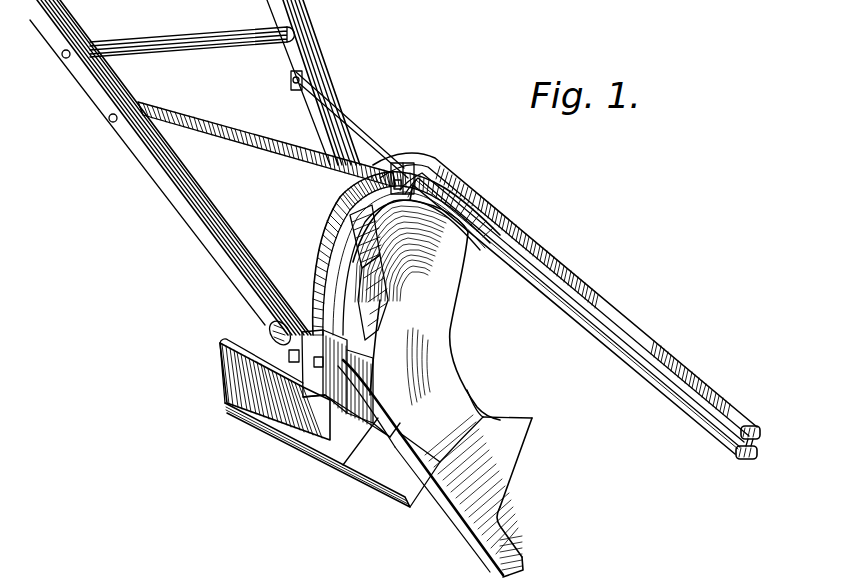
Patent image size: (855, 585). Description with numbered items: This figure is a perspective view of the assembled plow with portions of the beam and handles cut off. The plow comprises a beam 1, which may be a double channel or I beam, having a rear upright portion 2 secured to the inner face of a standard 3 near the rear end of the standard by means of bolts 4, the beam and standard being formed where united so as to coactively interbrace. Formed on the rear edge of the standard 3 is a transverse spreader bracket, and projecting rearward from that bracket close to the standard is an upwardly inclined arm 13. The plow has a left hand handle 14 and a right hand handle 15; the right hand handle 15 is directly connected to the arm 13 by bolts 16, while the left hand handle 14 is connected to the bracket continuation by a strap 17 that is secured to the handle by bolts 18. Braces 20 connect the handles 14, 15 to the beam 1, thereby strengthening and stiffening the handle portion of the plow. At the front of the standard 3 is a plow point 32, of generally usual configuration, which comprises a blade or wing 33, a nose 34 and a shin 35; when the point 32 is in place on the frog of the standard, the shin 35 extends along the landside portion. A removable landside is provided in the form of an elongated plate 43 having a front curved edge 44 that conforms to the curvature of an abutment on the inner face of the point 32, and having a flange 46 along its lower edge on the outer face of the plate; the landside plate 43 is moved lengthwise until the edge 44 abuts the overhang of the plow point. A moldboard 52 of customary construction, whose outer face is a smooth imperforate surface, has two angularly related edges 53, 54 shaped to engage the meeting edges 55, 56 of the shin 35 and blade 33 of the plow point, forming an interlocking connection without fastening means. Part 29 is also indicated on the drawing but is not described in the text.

The beam 1 is at (538, 233).
The rear upright portion 2 is at (312, 268).
The standard 3 is at (325, 393).
The bolts 4 is at (300, 383).
The arm 13 is at (270, 328).
The left hand handle 14 is at (313, 61).
The right hand handle 15 is at (200, 214).
The bolts 16 is at (289, 355).
The strap 17 is at (383, 245).
The bolts 18 is at (365, 265).
The braces 20 is at (297, 122).
The flange 29 is at (343, 465).
The plow point 32 is at (507, 503).
The blade or wing 33 is at (505, 457).
The nose 34 is at (520, 555).
The shin 35 is at (403, 462).
The landside plate 43 is at (332, 437).
The front curved edge 44 is at (425, 503).
The flange 46 is at (232, 415).
The moldboard 52 is at (426, 310).
The edge 53 is at (400, 405).
The edge 54 is at (477, 408).
The meeting edge 55 is at (400, 423).
The meeting edge 56 is at (483, 427).